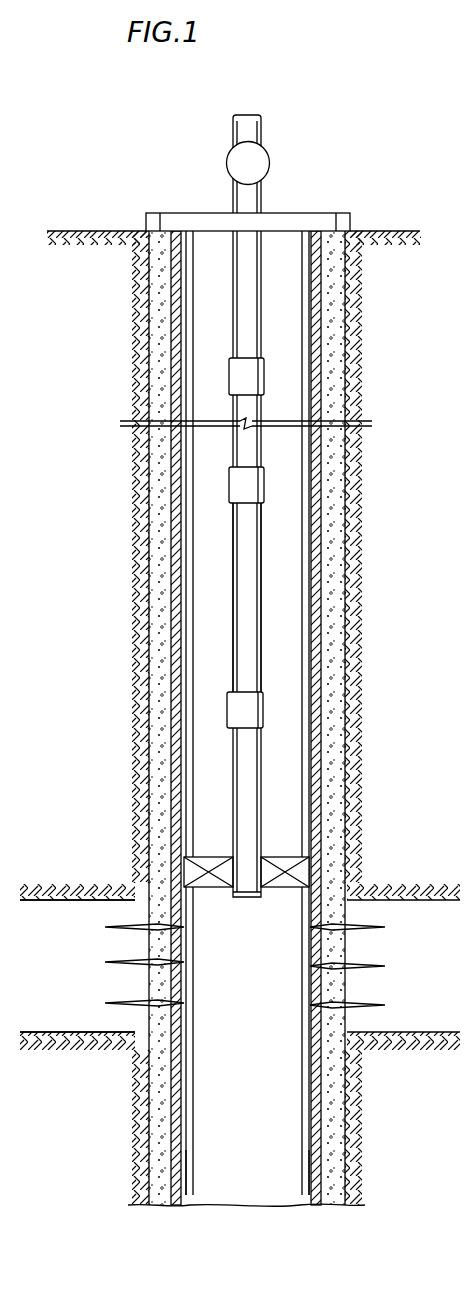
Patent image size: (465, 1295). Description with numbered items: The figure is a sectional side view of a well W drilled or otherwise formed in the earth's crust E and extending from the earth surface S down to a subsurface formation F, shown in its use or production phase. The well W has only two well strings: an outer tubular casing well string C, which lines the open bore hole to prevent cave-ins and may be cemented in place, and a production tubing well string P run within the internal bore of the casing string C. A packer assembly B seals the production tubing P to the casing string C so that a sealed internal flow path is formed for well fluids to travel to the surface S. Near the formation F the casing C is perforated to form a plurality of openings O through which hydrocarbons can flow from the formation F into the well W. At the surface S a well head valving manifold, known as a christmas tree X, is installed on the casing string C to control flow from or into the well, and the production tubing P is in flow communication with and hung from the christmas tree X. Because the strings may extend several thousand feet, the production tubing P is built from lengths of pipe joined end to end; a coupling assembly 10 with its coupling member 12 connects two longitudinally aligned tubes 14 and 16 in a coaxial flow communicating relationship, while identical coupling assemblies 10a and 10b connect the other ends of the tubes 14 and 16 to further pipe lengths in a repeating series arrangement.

The christmas tree X is at (240, 190).
The earth surface S is at (392, 231).
The earth's crust E is at (83, 287).
The production tubing well string P is at (238, 302).
The casing well string C is at (348, 328).
The well coupling assembly 10a is at (238, 372).
The tube 14 is at (240, 441).
The coupling member 12 is at (252, 490).
The tube 16 is at (238, 547).
The coupling assembly 10 is at (364, 548).
The well coupling assembly 10b is at (258, 708).
The packer assembly B is at (183, 868).
The subsurface formation F is at (60, 993).
The openings O is at (318, 960).
The well W is at (218, 1118).